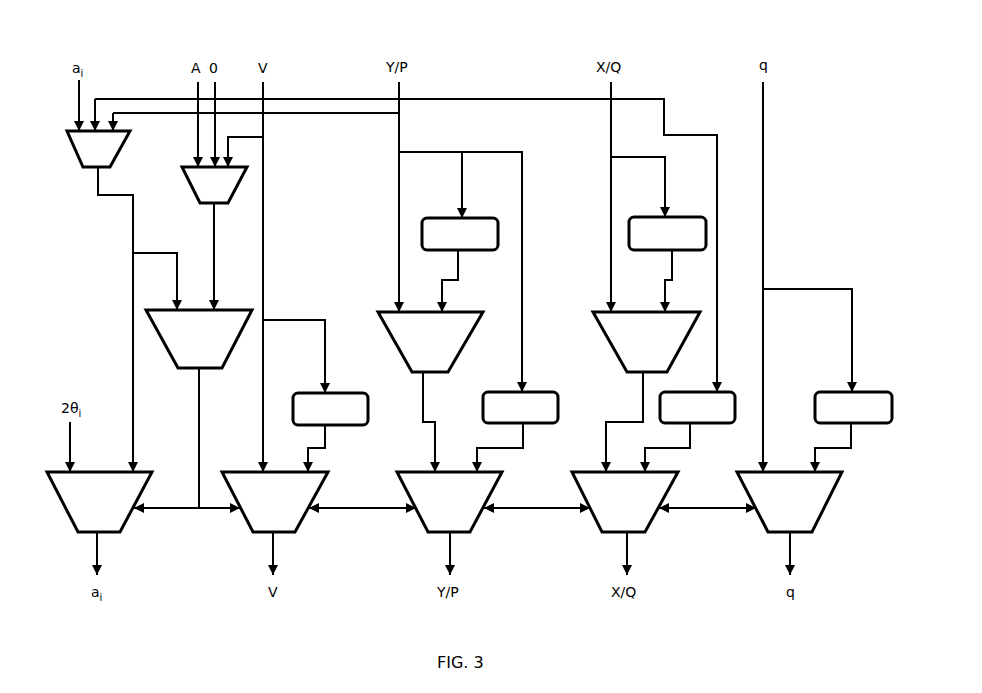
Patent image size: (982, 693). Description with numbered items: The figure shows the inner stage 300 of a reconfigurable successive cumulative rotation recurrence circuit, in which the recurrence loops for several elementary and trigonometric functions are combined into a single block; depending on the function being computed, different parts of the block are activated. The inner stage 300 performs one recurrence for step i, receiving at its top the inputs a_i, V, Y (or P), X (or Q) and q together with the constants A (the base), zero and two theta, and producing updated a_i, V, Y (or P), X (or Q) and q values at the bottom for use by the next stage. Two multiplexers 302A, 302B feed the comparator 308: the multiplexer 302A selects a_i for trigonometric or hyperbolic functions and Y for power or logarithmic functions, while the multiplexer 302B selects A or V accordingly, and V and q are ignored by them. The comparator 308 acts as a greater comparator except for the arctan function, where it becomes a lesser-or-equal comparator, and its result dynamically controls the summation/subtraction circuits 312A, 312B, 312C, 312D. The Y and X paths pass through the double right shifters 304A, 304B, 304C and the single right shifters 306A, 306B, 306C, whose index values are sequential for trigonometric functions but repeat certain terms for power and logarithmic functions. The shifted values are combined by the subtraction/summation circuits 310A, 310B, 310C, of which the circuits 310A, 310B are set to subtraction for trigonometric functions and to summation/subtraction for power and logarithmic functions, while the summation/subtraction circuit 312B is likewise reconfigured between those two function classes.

The inner stage 300 is at (812, 67).
The multiplexer 302A is at (63, 147).
The multiplexer 302B is at (192, 187).
The double right shifter 304A is at (477, 212).
The double right shifter 304B is at (682, 210).
The double right shifter 304C is at (343, 386).
The single right shifter 306A is at (545, 387).
The single right shifter 306B is at (733, 388).
The single right shifter 306C is at (885, 380).
The comparator 308 is at (235, 300).
The subtraction/summation circuit 310A is at (472, 305).
The subtraction/summation circuit 310B is at (592, 305).
The subtraction/summation circuit 310C is at (568, 477).
The summation/subtraction circuit 312A is at (45, 485).
The summation/subtraction circuit 312B is at (240, 468).
The summation/subtraction circuit 312C is at (400, 466).
The summation/subtraction circuit 312D is at (835, 498).